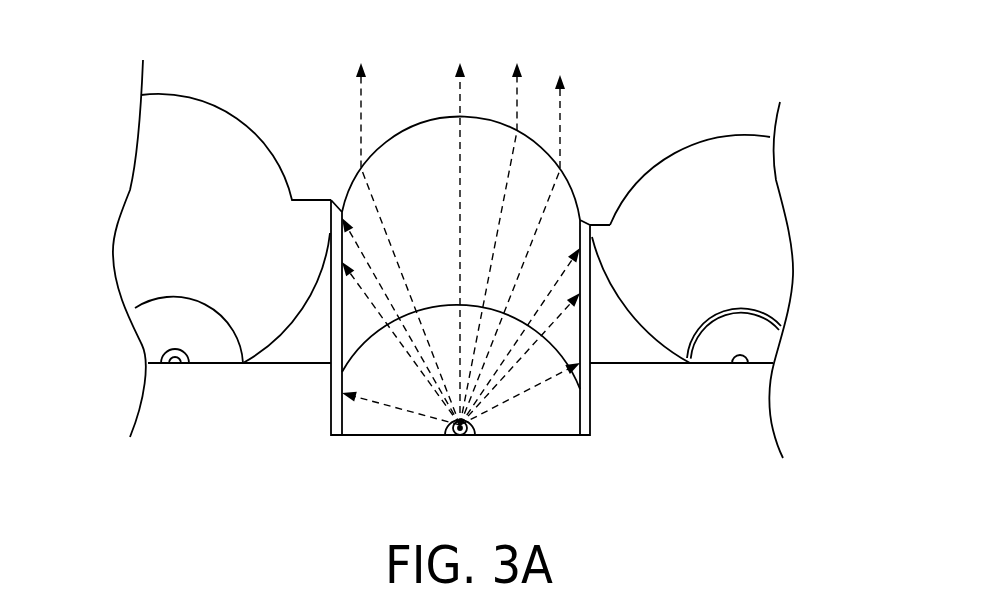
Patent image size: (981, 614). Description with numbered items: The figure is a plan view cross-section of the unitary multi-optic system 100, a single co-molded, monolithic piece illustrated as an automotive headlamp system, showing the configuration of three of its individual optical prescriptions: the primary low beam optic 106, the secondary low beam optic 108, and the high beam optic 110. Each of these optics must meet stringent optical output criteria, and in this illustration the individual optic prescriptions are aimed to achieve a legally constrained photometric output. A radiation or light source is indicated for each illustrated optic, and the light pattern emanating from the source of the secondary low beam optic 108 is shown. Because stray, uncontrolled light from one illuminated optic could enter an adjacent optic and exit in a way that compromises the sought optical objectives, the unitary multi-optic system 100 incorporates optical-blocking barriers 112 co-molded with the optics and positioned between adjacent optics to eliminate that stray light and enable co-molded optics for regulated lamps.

The unitary multi-optic system 100 is at (109, 40).
The primary low beam optic 106 is at (718, 180).
The secondary low beam optic 108 is at (422, 168).
The high beam optic 110 is at (253, 163).
The optical-blocking barrier 112 is at (586, 438).